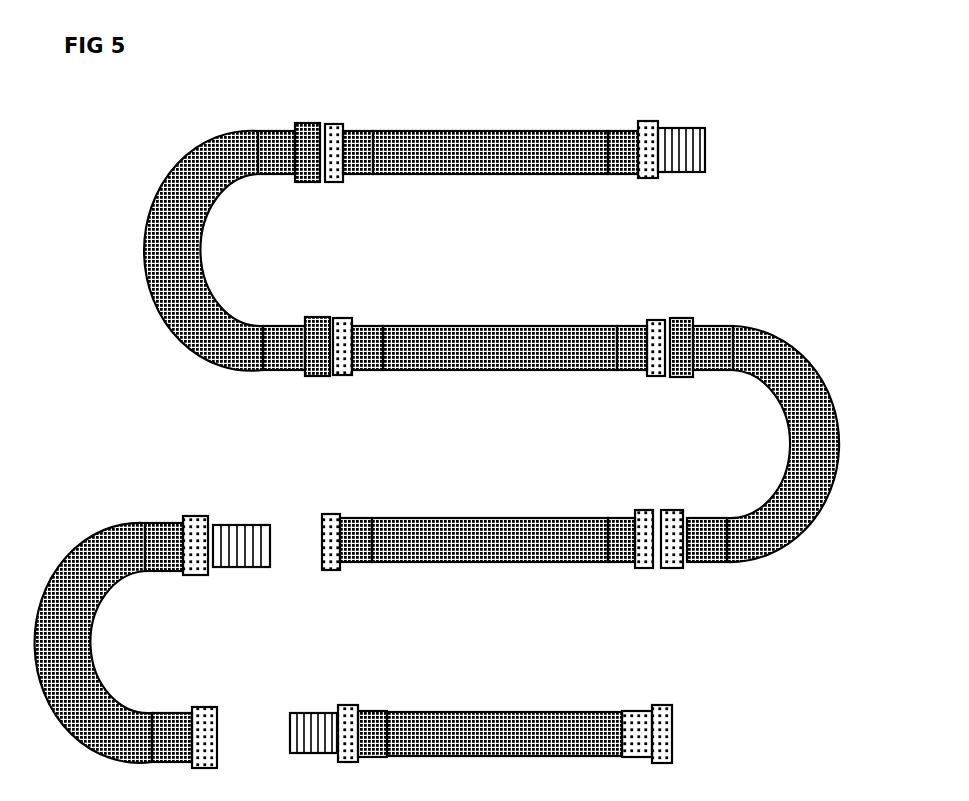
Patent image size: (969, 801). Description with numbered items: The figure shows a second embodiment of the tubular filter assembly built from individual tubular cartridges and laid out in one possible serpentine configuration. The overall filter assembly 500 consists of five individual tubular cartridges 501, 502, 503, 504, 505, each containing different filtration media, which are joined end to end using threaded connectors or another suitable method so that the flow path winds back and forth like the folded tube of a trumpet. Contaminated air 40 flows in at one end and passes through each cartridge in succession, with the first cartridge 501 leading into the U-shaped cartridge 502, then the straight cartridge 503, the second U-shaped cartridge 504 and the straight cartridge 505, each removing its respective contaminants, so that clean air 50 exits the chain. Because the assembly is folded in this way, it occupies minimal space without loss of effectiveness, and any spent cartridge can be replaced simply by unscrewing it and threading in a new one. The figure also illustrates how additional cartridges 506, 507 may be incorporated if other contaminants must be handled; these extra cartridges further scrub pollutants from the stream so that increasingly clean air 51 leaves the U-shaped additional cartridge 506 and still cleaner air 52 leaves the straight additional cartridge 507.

The filter assembly 500 is at (426, 106).
The tubular cartridge 501 is at (524, 124).
The tubular cartridge 502 is at (185, 161).
The tubular cartridge 503 is at (489, 318).
The tubular cartridge 504 is at (795, 340).
The tubular cartridge 505 is at (475, 512).
The additional cartridge 506 is at (80, 536).
The additional cartridge 507 is at (511, 707).
The contaminated air 40 is at (732, 151).
The clean air 50 is at (320, 544).
The increasingly clean air 51 is at (265, 739).
The increasingly clean air 52 is at (777, 740).